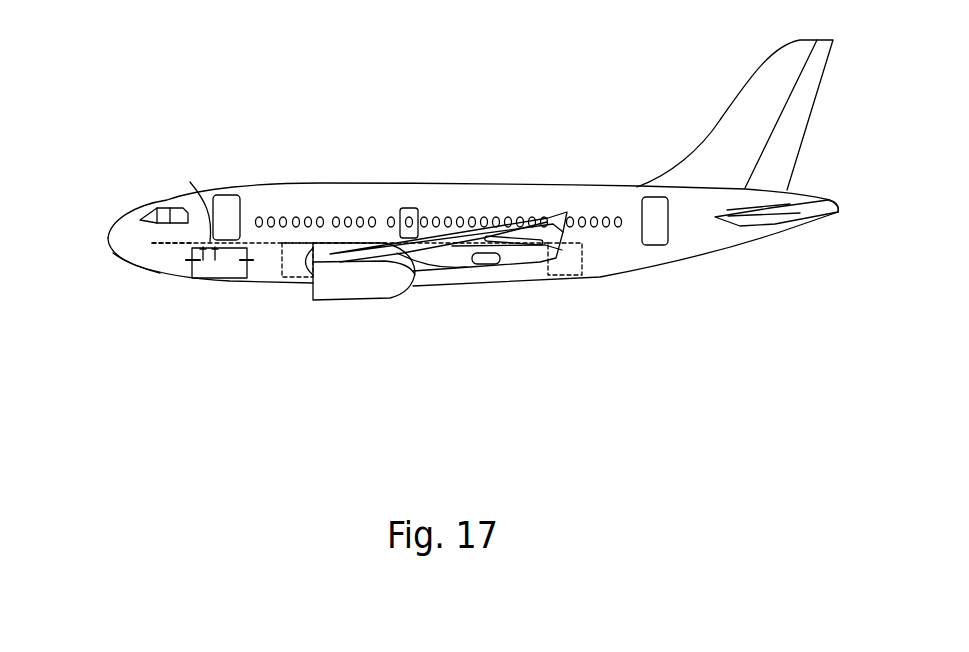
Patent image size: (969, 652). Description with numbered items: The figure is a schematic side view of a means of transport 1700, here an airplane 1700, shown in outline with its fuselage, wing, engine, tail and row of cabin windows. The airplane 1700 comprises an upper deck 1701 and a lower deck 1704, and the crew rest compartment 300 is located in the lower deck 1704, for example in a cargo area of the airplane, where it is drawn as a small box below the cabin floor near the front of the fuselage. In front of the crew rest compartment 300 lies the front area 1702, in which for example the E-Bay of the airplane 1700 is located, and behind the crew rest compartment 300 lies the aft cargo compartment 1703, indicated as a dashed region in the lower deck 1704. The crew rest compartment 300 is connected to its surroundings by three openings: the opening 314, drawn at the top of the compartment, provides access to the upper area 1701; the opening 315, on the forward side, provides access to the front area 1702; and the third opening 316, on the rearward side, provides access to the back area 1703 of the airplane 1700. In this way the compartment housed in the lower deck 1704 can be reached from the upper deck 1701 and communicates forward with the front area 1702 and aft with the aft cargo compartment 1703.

The means of transport 1700 is at (542, 112).
The upper deck 1701 is at (195, 222).
The front area 1702 is at (169, 257).
The aft cargo compartment 1703 is at (262, 260).
The lower deck 1704 is at (146, 256).
The crew rest compartment 300 is at (225, 265).
The opening 314 is at (195, 188).
The opening 315 is at (190, 272).
The third opening 316 is at (247, 272).